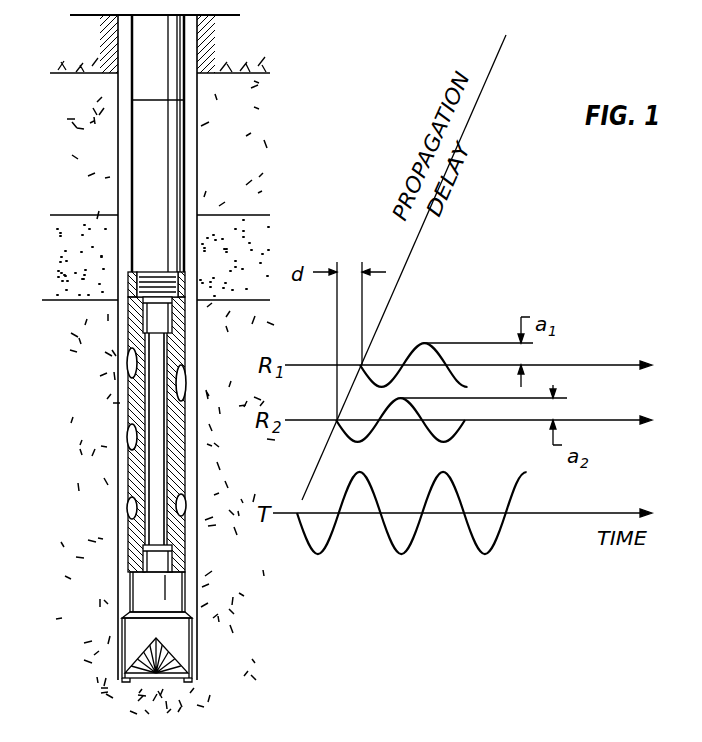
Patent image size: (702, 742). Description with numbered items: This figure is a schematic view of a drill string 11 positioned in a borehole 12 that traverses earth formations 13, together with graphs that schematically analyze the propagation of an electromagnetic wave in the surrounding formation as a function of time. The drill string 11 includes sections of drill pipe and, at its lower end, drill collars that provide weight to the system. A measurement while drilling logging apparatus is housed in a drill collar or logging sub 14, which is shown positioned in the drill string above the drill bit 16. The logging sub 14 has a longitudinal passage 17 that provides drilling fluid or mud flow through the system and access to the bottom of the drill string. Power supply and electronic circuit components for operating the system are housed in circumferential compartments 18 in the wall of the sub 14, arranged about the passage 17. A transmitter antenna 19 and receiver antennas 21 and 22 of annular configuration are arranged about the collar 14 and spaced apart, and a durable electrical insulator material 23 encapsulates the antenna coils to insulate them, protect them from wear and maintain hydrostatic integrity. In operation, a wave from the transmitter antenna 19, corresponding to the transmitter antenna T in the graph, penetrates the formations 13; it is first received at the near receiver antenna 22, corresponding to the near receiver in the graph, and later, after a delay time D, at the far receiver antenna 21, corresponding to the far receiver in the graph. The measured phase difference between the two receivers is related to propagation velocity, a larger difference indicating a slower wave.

The drill string 11 is at (193, 126).
The borehole 12 is at (196, 203).
The earth formations 13 is at (74, 170).
The drill collar or logging sub 14 is at (186, 300).
The drill bit 16 is at (187, 603).
The longitudinal passage 17 is at (163, 382).
The circumferential compartments 18 is at (142, 308).
The transmitter antenna 19 is at (130, 510).
The receiver antenna 21 is at (128, 363).
The receiver antenna 22 is at (128, 434).
The electrical insulator material 23 is at (184, 399).